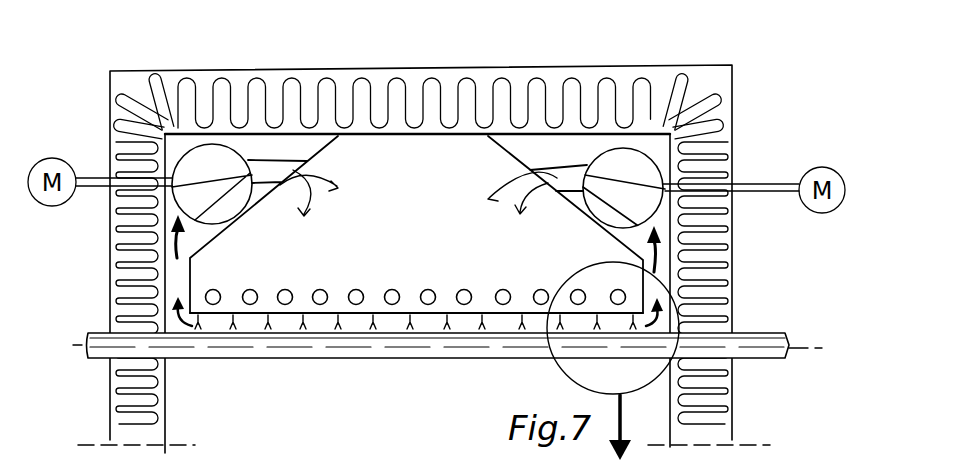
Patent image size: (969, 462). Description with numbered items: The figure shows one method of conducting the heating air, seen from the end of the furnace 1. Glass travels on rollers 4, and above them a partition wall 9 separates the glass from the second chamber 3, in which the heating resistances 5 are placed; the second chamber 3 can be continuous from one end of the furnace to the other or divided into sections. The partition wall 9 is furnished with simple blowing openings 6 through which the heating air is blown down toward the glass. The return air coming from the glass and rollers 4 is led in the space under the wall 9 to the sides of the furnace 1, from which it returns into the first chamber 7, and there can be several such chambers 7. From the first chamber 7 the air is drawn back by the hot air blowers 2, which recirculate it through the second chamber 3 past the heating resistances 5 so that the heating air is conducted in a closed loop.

The furnace 1 is at (312, 100).
The hot air blower 2 is at (200, 168).
The second chamber 3 is at (422, 182).
The rollers 4 is at (750, 347).
The heating resistances 5 is at (206, 295).
The blowing openings 6 is at (445, 328).
The first chamber 7 is at (186, 240).
The partition wall 9 is at (367, 317).